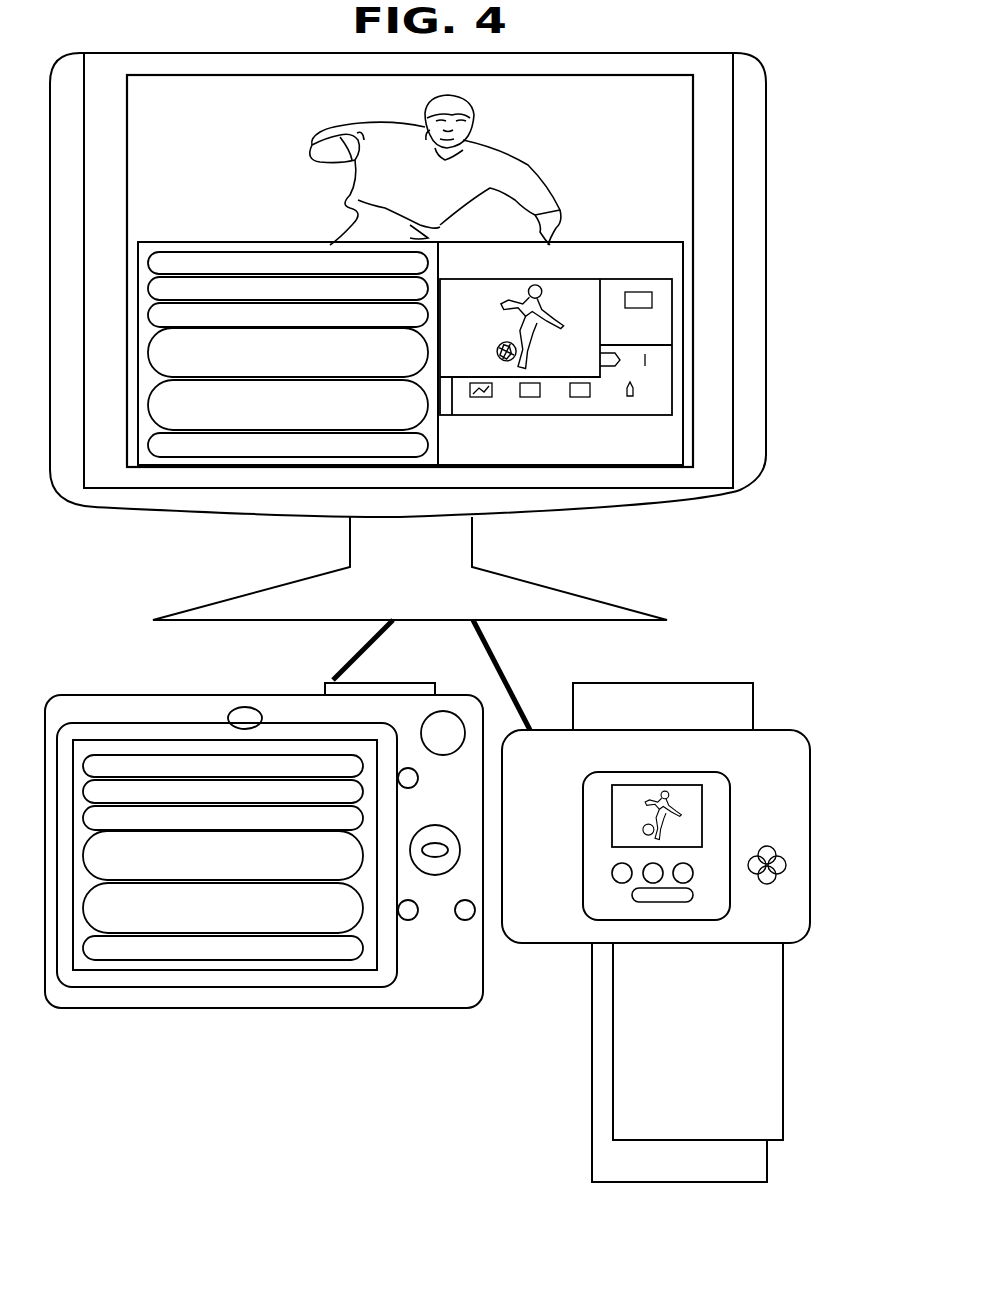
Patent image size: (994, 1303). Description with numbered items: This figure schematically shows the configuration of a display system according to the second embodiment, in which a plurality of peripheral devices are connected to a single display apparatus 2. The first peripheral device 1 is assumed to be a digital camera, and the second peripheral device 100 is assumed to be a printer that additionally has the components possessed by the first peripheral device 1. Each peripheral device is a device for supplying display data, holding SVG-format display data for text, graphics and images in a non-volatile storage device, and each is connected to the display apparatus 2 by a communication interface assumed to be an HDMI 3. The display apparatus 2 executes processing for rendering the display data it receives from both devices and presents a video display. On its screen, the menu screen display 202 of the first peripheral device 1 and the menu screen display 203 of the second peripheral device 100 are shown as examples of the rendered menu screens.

The peripheral device 1 is at (78, 697).
The display apparatus 2 is at (768, 115).
The HDMI 3 is at (373, 640).
The second peripheral device 100 is at (520, 944).
The menu screen display of the first peripheral device 202 is at (136, 426).
The menu screen display of the second peripheral device 203 is at (547, 466).